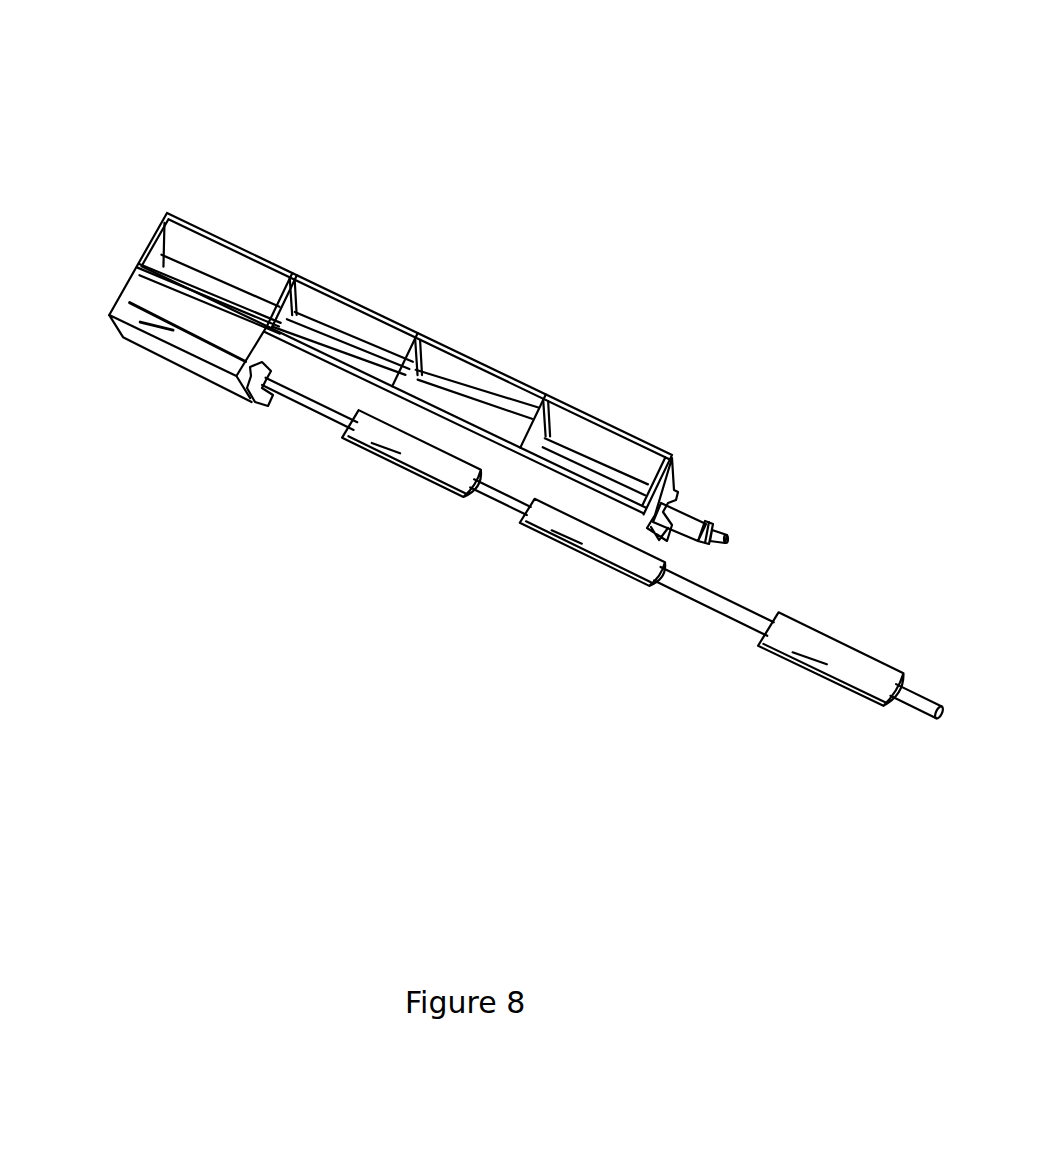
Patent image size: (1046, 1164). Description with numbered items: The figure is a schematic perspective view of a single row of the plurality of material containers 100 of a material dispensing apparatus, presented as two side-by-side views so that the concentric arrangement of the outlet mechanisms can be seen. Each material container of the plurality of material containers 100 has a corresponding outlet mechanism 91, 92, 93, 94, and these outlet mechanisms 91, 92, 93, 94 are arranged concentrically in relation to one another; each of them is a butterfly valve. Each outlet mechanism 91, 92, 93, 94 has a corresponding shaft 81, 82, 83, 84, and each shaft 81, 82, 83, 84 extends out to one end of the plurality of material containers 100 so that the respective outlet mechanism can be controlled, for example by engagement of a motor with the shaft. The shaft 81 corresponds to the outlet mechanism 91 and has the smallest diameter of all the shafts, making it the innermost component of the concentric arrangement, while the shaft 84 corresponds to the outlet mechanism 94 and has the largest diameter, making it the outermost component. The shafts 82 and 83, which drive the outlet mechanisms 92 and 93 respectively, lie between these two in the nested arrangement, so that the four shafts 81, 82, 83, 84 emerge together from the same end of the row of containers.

The plurality of material containers 100 is at (482, 88).
The shaft 81 is at (302, 399).
The shaft 82 is at (503, 500).
The shaft 83 is at (713, 606).
The shaft 84 is at (921, 707).
The outlet mechanism 91 is at (192, 262).
The outlet mechanism 92 is at (343, 337).
The outlet mechanism 93 is at (467, 400).
The outlet mechanism 94 is at (597, 463).